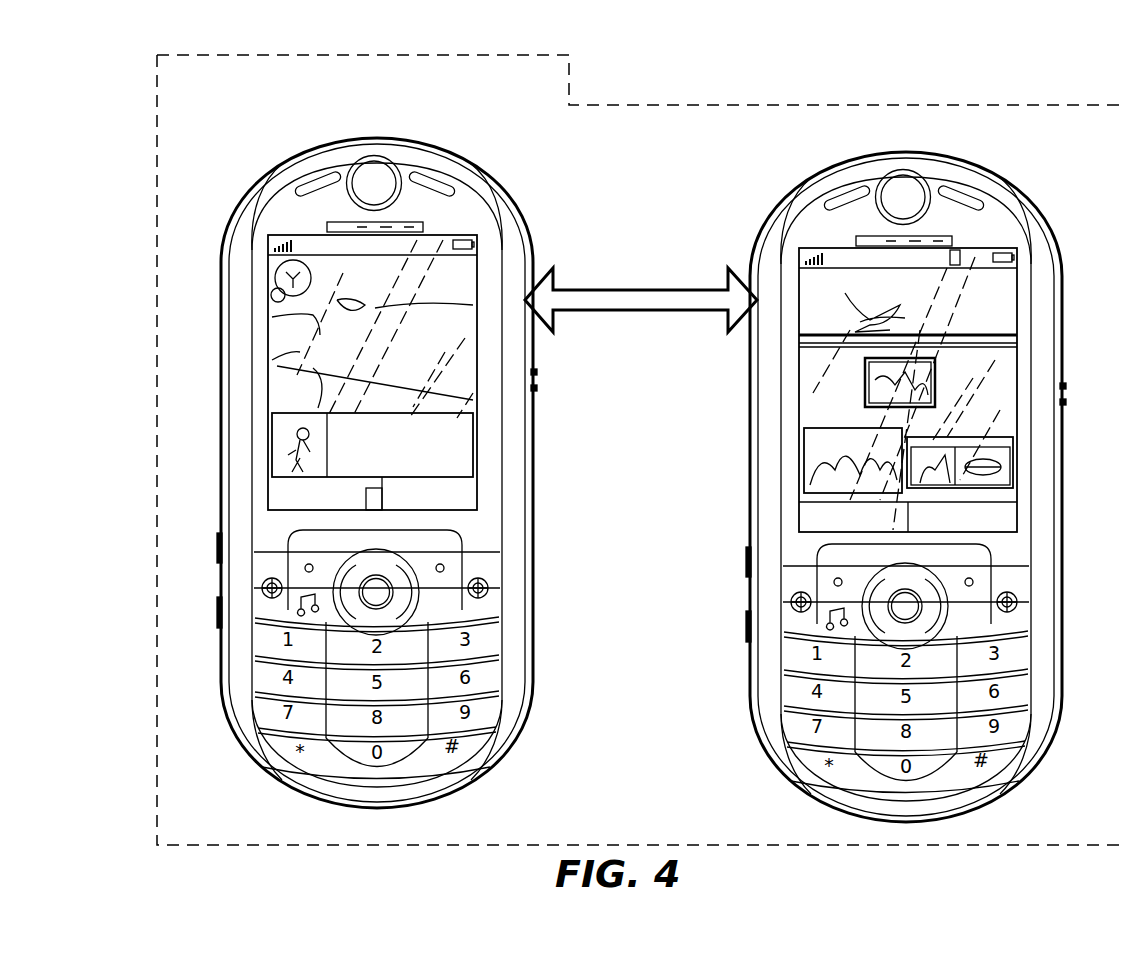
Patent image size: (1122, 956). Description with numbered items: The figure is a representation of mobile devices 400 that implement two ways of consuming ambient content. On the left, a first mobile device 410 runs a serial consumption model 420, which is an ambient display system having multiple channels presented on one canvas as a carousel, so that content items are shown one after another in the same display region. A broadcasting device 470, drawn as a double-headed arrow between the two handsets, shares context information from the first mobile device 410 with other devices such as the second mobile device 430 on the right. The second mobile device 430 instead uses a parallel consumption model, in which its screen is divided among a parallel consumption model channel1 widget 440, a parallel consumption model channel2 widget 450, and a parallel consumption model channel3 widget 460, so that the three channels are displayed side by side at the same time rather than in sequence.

The mobile devices 400 is at (655, 148).
The first mobile device 410 is at (355, 454).
The serial consumption model 420 is at (288, 452).
The second mobile device 430 is at (907, 487).
The parallel consumption model channel1 widget 440 is at (975, 438).
The parallel consumption model channel2 widget 450 is at (866, 381).
The parallel consumption model channel3 widget 460 is at (818, 462).
The broadcasting device 470 is at (638, 300).